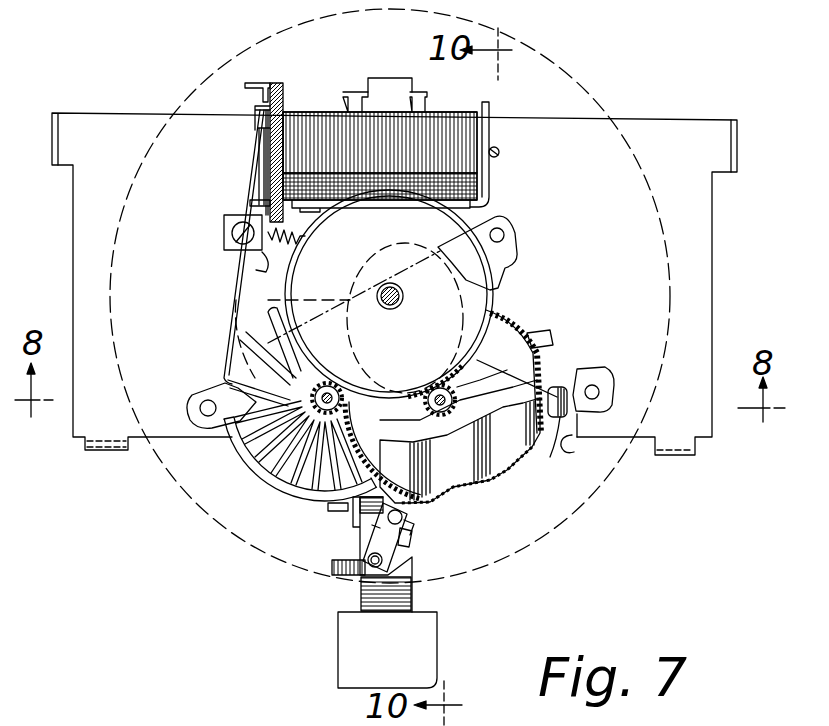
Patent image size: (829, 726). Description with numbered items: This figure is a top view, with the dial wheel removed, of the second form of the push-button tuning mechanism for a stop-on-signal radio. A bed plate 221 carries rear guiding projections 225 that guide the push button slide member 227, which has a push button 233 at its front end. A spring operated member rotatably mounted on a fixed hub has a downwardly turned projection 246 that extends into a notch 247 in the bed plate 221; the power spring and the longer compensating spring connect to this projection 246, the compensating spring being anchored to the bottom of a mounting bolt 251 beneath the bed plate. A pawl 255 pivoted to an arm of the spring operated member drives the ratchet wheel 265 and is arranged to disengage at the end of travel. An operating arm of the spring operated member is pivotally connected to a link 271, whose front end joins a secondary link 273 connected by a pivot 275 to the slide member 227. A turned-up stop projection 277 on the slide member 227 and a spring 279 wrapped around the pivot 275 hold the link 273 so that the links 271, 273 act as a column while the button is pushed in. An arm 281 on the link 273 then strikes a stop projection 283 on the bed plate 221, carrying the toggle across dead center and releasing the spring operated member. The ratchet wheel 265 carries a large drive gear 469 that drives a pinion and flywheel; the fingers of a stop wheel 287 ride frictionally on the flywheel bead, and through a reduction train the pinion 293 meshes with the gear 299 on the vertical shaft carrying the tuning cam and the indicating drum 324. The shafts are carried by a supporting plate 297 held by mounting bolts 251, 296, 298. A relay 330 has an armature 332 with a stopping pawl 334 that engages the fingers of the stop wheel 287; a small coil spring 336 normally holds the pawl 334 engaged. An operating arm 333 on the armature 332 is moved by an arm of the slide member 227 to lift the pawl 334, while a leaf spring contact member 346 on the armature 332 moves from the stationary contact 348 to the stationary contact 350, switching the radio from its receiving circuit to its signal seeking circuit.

The bed plate 221 is at (707, 285).
The guiding projections 225 is at (428, 90).
The push button slide member 227 is at (408, 594).
The push button 233 is at (340, 632).
The downwardly turned projection 246 is at (550, 457).
The notch 247 is at (585, 452).
The mounting bolt 251 is at (198, 395).
The pawl 255 is at (543, 335).
The ratchet wheel 265 is at (498, 468).
The link 271 is at (425, 512).
The secondary link 273 is at (370, 535).
The pivot 275 is at (366, 556).
The stop projection 277 is at (408, 528).
The spring 279 is at (412, 552).
The arm 281 is at (333, 567).
The stop projection 283 is at (328, 507).
The stop wheel 287 is at (257, 444).
The second pinion 293 is at (452, 396).
The mounting bolt 296 is at (505, 237).
The supporting plate 297 is at (495, 262).
The mounting bolt 298 is at (600, 386).
The gear 299 is at (482, 213).
The indicating drum 324 is at (578, 512).
The relay 330 is at (313, 112).
The armature 332 is at (260, 147).
The operating arm 333 is at (260, 260).
The stopping pawl 334 is at (240, 296).
The coil spring 336 is at (282, 237).
The leaf spring contact member 346 is at (258, 131).
The stationary contact 348 is at (255, 108).
The stationary contact 350 is at (295, 72).
The large drive gear 469 is at (467, 503).